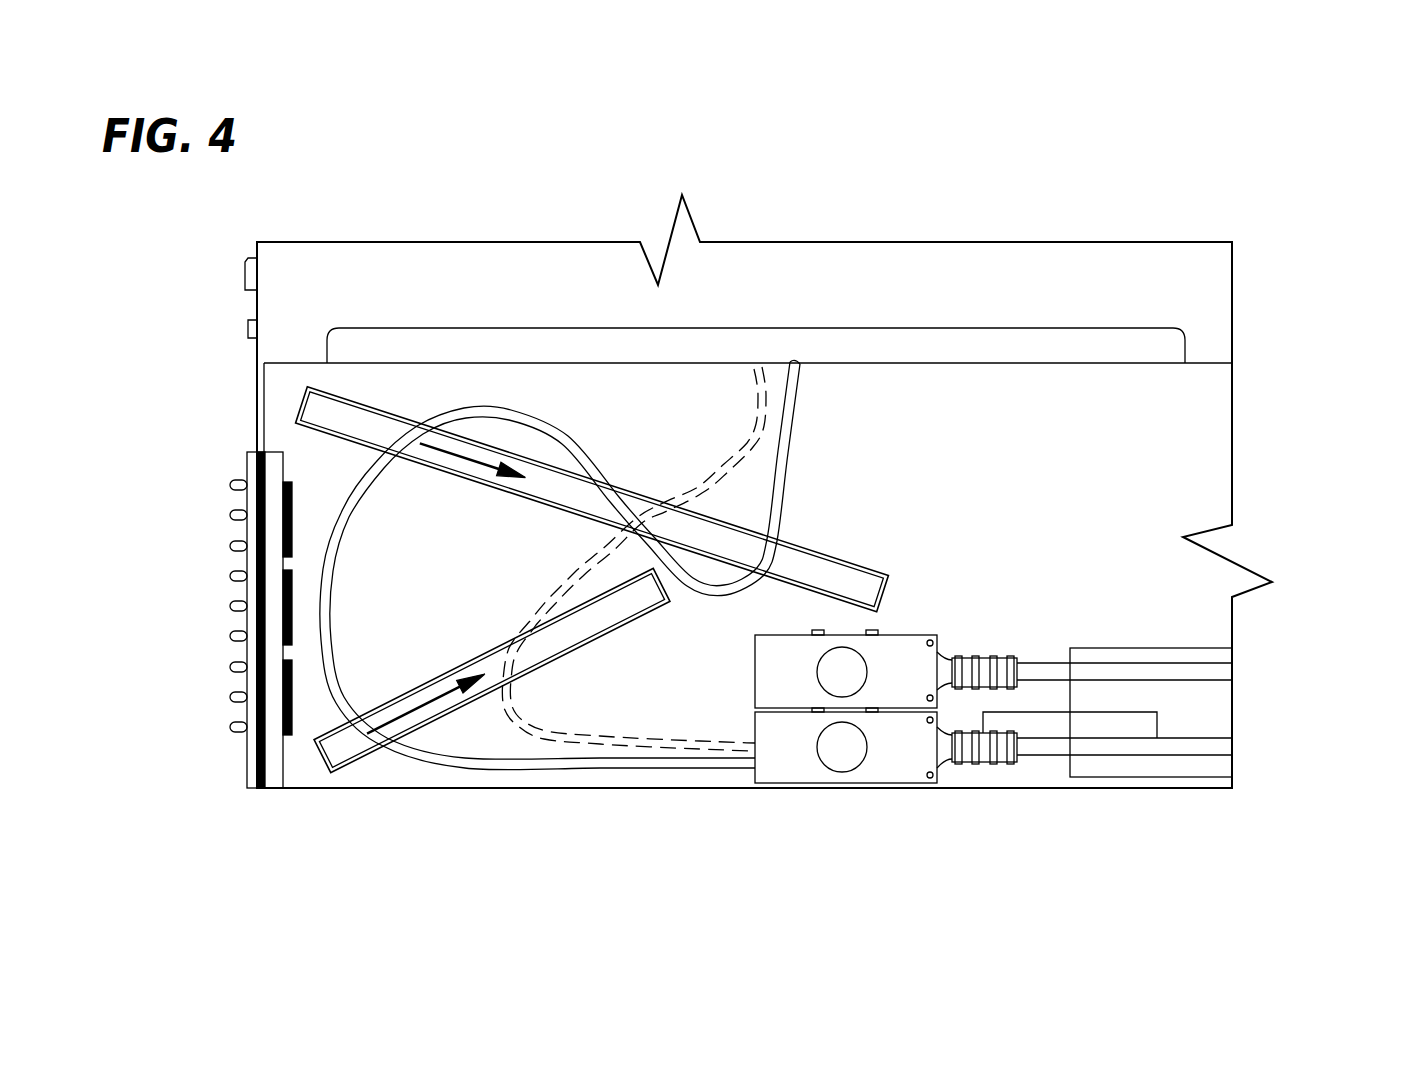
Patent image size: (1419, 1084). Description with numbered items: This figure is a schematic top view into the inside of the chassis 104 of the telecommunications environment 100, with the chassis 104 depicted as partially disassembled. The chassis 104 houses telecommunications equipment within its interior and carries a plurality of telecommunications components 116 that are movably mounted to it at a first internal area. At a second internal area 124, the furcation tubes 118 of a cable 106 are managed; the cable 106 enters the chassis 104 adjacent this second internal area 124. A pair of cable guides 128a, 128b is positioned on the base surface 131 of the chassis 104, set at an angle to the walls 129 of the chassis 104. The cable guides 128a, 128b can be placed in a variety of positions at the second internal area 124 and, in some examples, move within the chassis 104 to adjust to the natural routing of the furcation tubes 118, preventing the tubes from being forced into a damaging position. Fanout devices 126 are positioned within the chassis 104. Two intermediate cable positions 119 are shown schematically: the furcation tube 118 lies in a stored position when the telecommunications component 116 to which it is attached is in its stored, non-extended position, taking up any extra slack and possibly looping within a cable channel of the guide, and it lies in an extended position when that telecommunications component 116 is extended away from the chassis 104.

The telecommunications environment 100 is at (1250, 138).
The chassis 104 is at (1126, 534).
The cable 106 is at (1187, 648).
The telecommunications component 116 is at (883, 347).
The furcation tube 118 is at (437, 763).
The intermediate cable position 119 is at (460, 400).
The second internal area 124 is at (1151, 449).
The fanout device 126 is at (790, 690).
The cable guide 128a is at (333, 748).
The cable guide 128b is at (330, 408).
The wall 129 is at (252, 450).
The base surface 131 is at (995, 472).